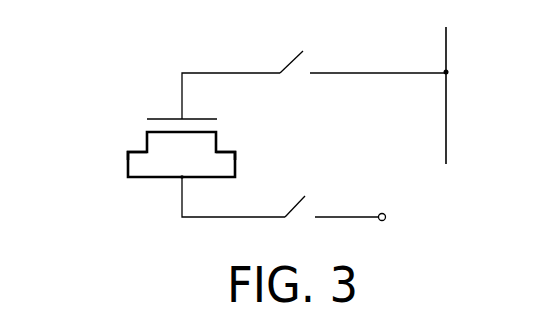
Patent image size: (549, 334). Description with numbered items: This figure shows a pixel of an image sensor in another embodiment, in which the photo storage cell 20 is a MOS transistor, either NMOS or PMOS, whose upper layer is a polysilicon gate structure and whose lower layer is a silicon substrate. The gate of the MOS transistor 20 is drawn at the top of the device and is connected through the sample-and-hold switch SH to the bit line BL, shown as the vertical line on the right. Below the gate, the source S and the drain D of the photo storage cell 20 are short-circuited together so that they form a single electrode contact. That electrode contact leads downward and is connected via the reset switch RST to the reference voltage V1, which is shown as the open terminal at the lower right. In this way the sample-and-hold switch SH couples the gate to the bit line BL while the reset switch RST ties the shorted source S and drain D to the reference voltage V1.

The photo storage cell 20 is at (114, 135).
The sample-and-hold switch SH is at (314, 76).
The reset switch RST is at (279, 195).
The drain D is at (218, 141).
The source S is at (123, 160).
The reference voltage V1 is at (396, 229).
The bit line BL is at (470, 95).